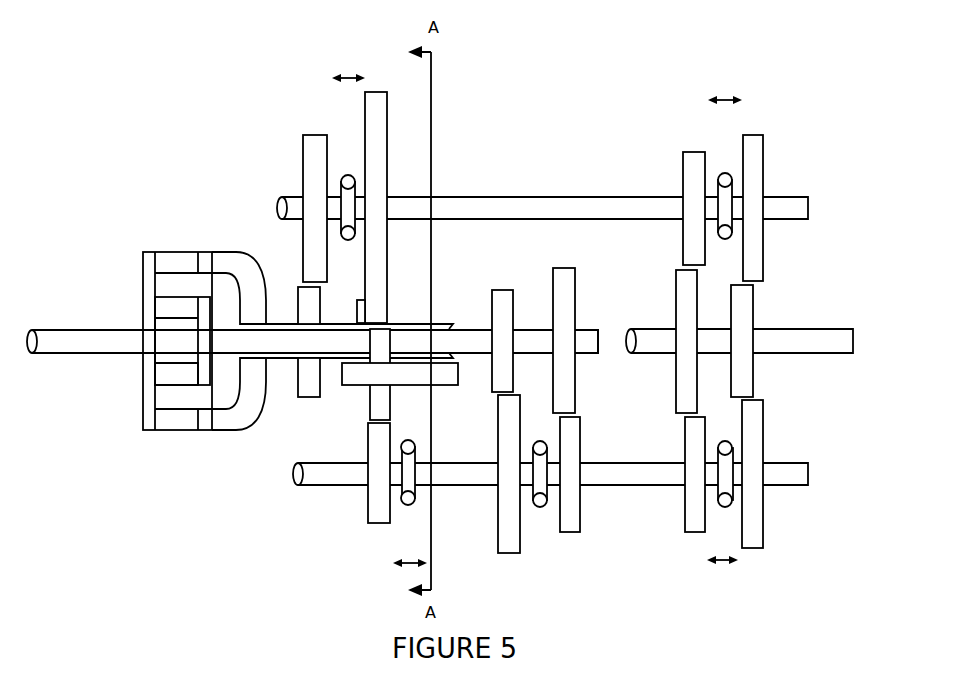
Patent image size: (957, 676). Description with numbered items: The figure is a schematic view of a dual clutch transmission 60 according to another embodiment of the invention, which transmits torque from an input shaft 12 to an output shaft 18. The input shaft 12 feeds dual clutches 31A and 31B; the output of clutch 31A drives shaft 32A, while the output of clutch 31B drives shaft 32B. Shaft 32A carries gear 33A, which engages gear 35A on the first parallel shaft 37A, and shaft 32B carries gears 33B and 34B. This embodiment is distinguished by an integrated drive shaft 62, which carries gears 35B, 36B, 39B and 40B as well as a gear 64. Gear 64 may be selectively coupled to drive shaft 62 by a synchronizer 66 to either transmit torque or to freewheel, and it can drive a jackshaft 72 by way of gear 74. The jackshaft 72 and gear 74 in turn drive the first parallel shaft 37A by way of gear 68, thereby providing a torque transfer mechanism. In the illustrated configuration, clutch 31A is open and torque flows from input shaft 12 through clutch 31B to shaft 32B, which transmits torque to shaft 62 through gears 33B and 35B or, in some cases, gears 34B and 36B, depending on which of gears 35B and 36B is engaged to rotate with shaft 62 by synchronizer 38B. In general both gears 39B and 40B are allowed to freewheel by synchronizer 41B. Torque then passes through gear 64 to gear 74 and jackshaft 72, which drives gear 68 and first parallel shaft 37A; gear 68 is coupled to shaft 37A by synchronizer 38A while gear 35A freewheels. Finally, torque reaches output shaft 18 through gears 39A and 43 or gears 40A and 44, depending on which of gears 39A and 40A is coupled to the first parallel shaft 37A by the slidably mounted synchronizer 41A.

The input shaft 12 is at (45, 330).
The output shaft 18 is at (818, 354).
The clutch 31A is at (175, 252).
The clutch 31B is at (173, 387).
The shaft 32A is at (228, 252).
The shaft 32B is at (475, 325).
The gear 33A is at (298, 287).
The gear 33B is at (513, 290).
The gear 34B is at (577, 363).
The gear 35A is at (305, 135).
The gear 35B is at (510, 553).
The gear 36B is at (575, 532).
The first parallel shaft 37A is at (492, 197).
The synchronizer 38A is at (345, 174).
The synchronizer 38B is at (540, 505).
The gear 39A is at (683, 153).
The gear 39B is at (685, 420).
The gear 40A is at (766, 152).
The gear 40B is at (755, 550).
The synchronizer 41A is at (730, 172).
The synchronizer 41B is at (725, 506).
The gear 43 is at (676, 295).
The gear 44 is at (753, 297).
The dual clutch transmission 60 is at (170, 56).
The drive shaft 62 is at (305, 486).
The gear 64 is at (367, 500).
The synchronizer 66 is at (405, 503).
The gear 68 is at (377, 92).
The jackshaft 72 is at (342, 385).
The gear 74 is at (368, 407).